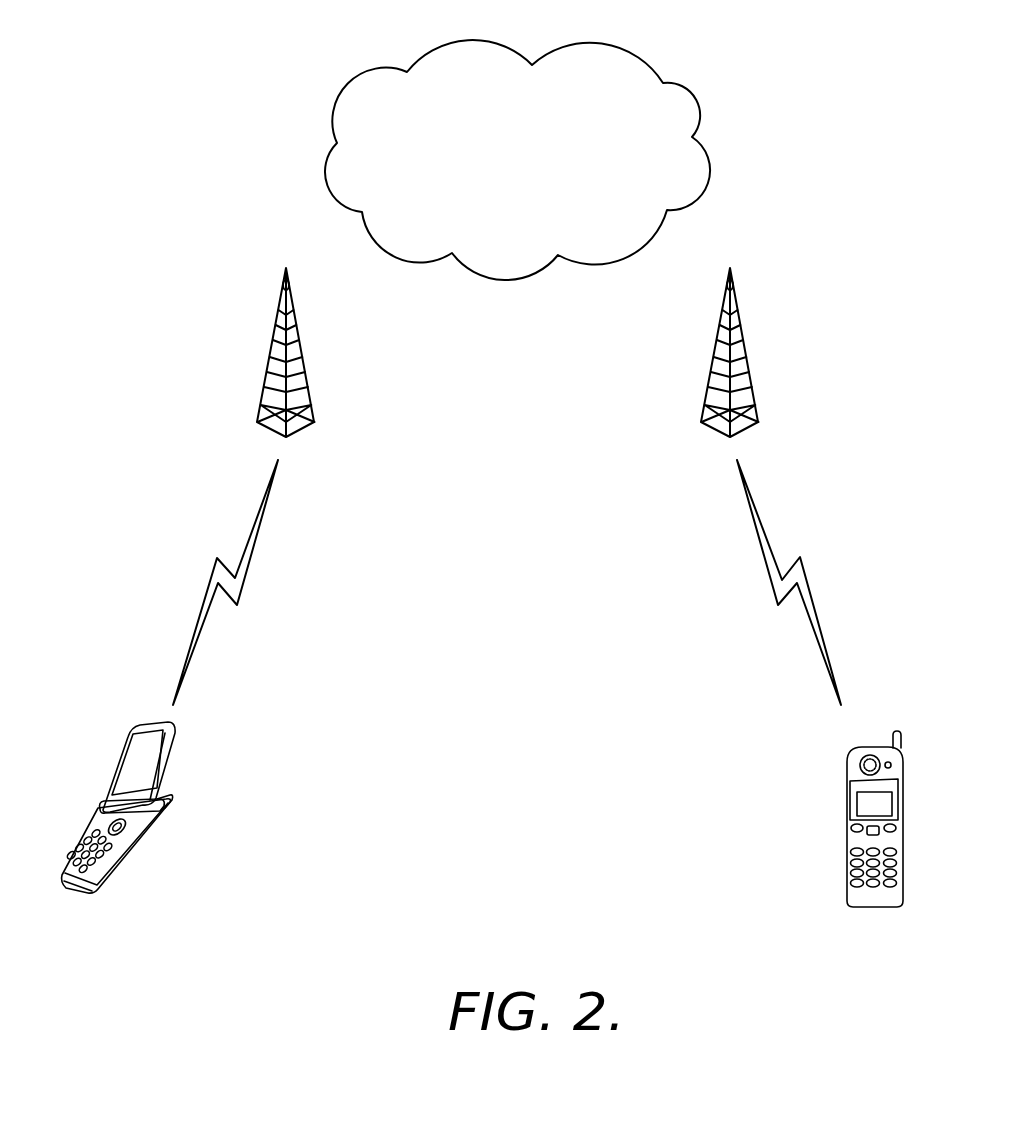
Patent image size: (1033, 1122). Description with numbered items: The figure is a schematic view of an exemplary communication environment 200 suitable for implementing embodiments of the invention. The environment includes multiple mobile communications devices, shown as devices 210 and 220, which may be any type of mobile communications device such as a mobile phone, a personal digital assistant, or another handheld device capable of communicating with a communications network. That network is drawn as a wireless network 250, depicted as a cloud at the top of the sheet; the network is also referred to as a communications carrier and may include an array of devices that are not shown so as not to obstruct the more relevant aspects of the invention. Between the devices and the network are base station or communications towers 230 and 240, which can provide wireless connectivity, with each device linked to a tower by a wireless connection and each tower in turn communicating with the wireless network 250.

The communication environment 200 is at (172, 105).
The device 210 is at (136, 852).
The device 220 is at (845, 842).
The tower 230 is at (272, 353).
The tower 240 is at (747, 351).
The wireless network 250 is at (600, 43).